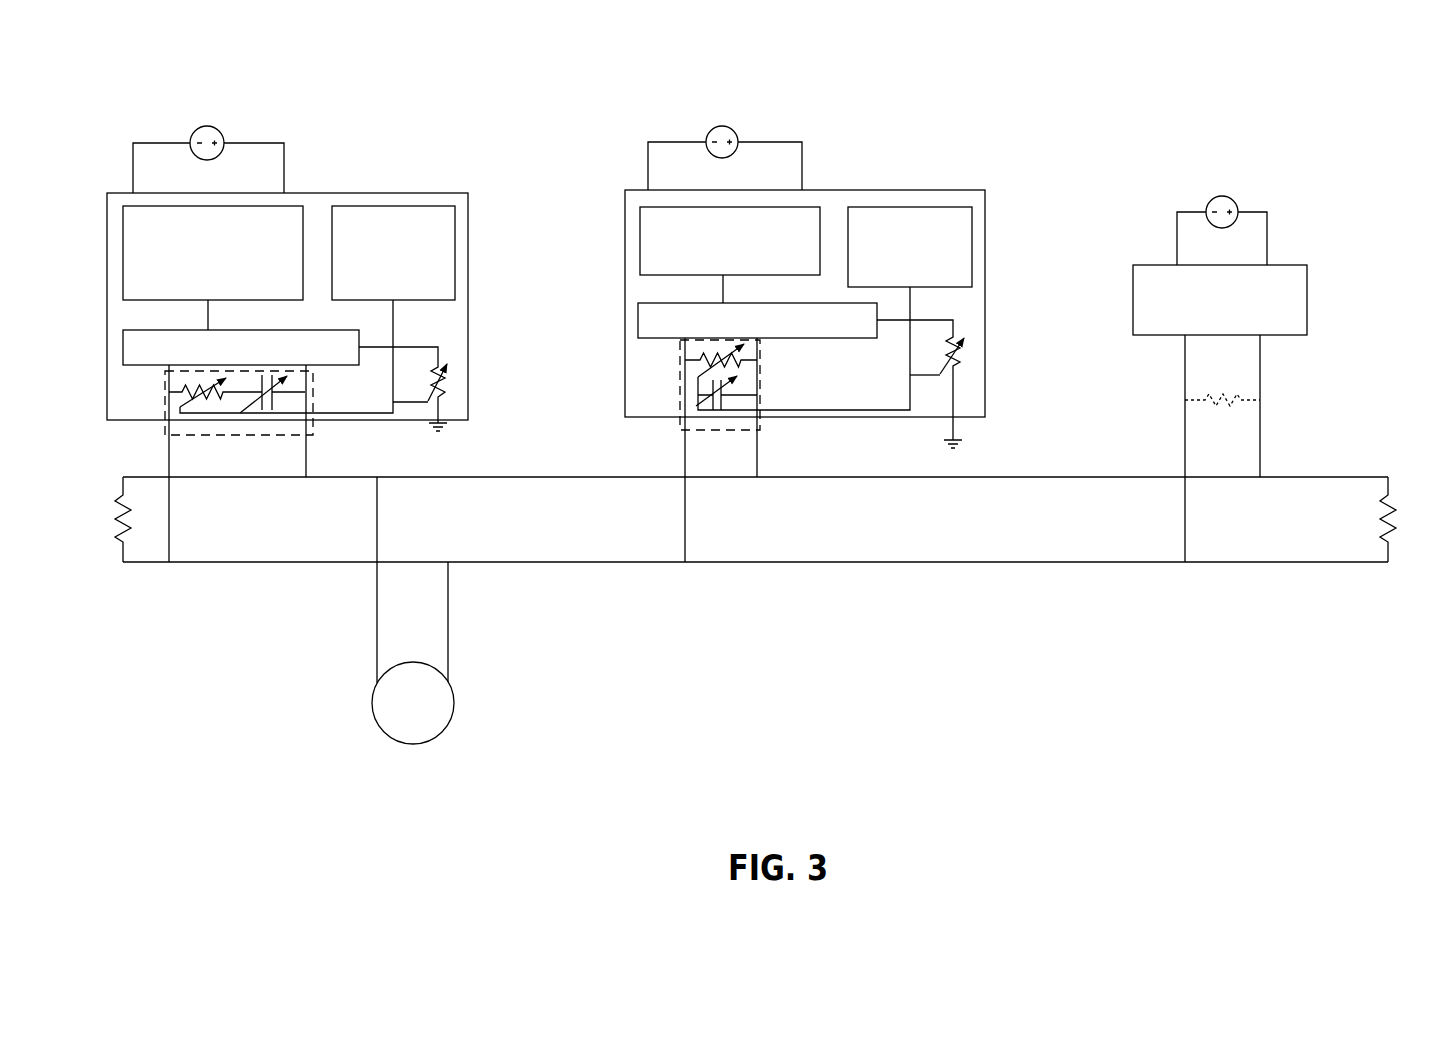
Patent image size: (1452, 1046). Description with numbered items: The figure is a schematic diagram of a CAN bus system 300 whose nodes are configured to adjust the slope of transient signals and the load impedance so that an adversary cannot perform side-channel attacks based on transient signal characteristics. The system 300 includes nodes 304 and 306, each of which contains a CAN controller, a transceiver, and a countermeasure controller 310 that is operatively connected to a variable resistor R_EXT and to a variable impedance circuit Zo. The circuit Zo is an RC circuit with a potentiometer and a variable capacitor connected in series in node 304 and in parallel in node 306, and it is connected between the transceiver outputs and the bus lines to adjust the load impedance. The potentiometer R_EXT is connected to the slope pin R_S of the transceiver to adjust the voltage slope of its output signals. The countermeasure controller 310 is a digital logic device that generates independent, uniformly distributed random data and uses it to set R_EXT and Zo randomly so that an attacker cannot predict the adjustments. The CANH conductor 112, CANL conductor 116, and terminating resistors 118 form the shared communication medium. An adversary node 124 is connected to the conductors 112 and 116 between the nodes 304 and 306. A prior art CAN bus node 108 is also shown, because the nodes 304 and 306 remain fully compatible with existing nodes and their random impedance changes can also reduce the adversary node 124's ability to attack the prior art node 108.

The CAN bus system 300 is at (170, 79).
The node 304 is at (322, 193).
The node 306 is at (823, 190).
The countermeasure controller 310 is at (455, 245).
The prior art CAN Bus node 108 is at (1280, 265).
The CANH conductor 112 is at (570, 477).
The CANL conductor 116 is at (575, 562).
The terminating resistors 118 is at (123, 508).
The adversary node 124 is at (448, 713).